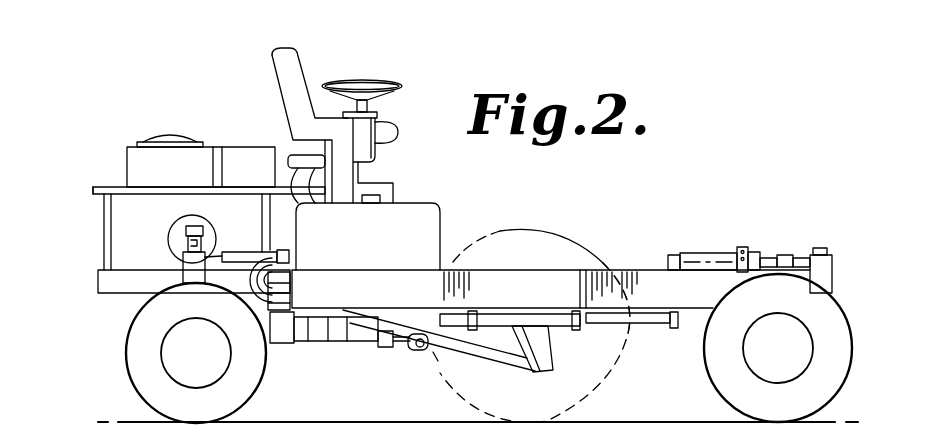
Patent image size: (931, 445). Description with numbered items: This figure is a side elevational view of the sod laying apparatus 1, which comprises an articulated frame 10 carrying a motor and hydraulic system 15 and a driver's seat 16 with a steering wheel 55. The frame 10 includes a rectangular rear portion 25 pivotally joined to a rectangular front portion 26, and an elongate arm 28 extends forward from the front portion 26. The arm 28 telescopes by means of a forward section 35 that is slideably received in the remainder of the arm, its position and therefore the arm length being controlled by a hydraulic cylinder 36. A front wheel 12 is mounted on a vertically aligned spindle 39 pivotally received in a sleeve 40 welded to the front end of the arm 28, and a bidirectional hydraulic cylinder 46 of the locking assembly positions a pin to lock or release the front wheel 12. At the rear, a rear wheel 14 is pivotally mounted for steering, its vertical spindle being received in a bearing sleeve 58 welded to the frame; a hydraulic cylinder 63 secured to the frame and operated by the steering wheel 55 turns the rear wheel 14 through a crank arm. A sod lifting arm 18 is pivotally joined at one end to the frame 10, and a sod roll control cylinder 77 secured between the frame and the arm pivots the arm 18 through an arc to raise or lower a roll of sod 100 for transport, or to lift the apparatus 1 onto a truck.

The sod laying apparatus 1 is at (158, 78).
The motor and hydraulic system 15 is at (58, 155).
The driver's seat 16 is at (268, 58).
The steering wheel 55 is at (386, 85).
The rear portion 25 is at (327, 293).
The forward section 35 is at (630, 271).
The elongate arm 28 is at (682, 297).
The sod roll control cylinder 77 is at (328, 345).
The sod lifting arm 18 is at (460, 352).
The hydraulic cylinder 36 is at (556, 330).
The frame 10 is at (498, 233).
The roll of sod 100 is at (584, 247).
The hydraulic cylinder 46 is at (702, 255).
The spindle 39 is at (822, 248).
The sleeve 40 is at (831, 278).
The front wheel 12 is at (712, 388).
The rear wheel 14 is at (132, 381).
The bearing sleeve 58 is at (168, 272).
The front portion 26 is at (147, 290).
The hydraulic cylinder 63 is at (247, 248).